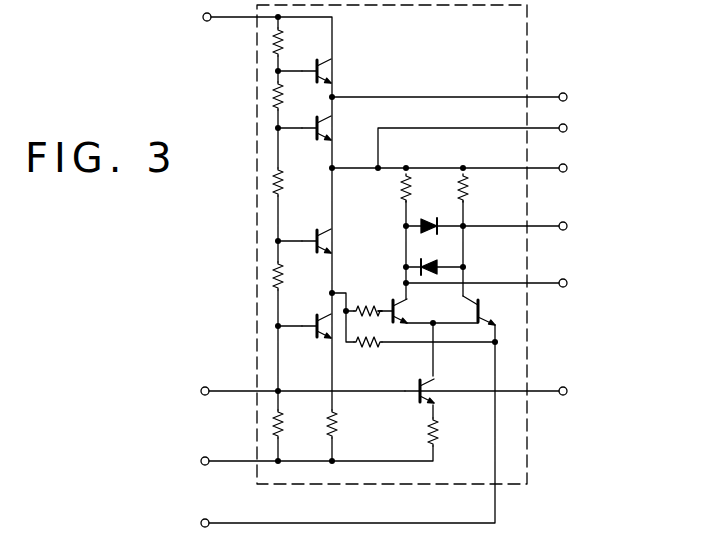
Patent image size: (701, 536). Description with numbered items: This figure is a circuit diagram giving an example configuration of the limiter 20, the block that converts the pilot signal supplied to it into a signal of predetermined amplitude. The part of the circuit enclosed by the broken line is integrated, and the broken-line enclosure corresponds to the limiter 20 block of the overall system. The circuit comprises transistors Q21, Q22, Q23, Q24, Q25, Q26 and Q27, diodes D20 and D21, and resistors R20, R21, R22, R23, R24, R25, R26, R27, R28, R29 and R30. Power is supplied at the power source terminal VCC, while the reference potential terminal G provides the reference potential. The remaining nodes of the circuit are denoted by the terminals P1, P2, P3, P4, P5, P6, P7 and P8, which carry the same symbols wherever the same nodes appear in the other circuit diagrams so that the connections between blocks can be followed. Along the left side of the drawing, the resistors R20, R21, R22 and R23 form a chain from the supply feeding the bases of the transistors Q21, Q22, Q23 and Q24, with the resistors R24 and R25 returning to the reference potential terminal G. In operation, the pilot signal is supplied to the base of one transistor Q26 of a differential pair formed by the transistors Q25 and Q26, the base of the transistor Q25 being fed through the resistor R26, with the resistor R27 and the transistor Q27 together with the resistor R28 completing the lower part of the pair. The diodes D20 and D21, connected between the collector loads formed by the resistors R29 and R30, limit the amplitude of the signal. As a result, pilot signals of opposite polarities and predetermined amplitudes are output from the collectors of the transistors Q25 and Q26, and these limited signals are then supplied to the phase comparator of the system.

The limiter 20 is at (527, 36).
The power source terminal VCC is at (186, 15).
The terminal P1 is at (206, 509).
The terminal P2 is at (204, 387).
The terminal P3 is at (567, 393).
The terminal P4 is at (567, 285).
The terminal P5 is at (567, 228).
The terminal P6 is at (567, 170).
The terminal P7 is at (567, 130).
The terminal P8 is at (567, 99).
The reference potential terminal G is at (206, 450).
The resistor R20 is at (284, 50).
The resistor R21 is at (296, 102).
The resistor R22 is at (284, 190).
The resistor R23 is at (284, 284).
The resistor R24 is at (284, 420).
The resistor R25 is at (338, 427).
The resistor R26 is at (376, 302).
The resistor R27 is at (376, 351).
The resistor R28 is at (439, 434).
The resistor R29 is at (400, 196).
The resistor R30 is at (469, 190).
The diode D20 is at (433, 219).
The diode D21 is at (440, 264).
The transistor Q21 is at (325, 78).
The transistor Q22 is at (325, 135).
The transistor Q23 is at (325, 246).
The transistor Q24 is at (322, 336).
The transistor Q25 is at (400, 316).
The transistor Q26 is at (470, 316).
The transistor Q27 is at (427, 396).